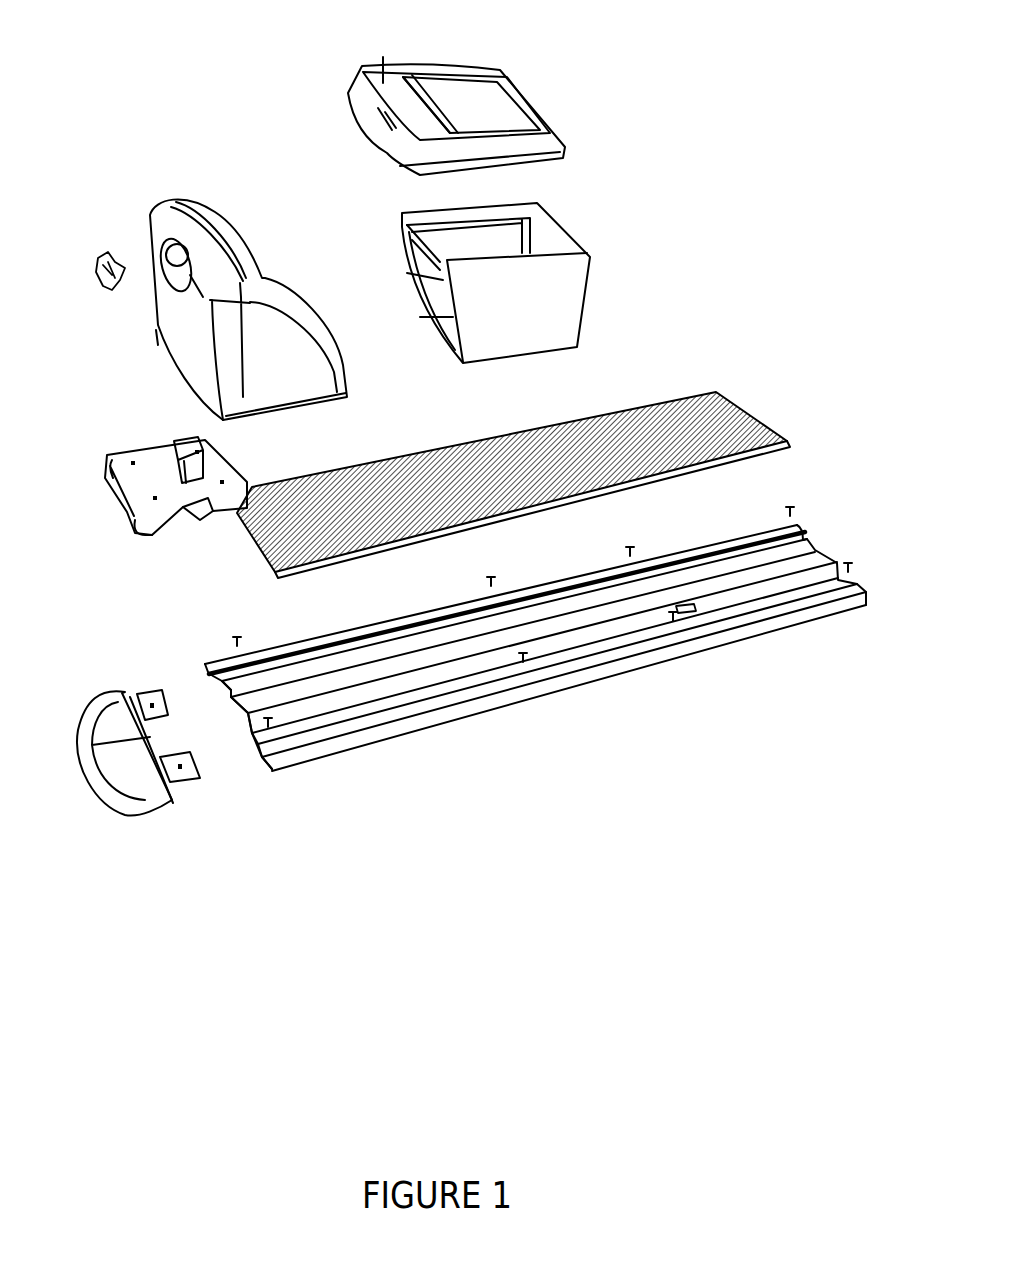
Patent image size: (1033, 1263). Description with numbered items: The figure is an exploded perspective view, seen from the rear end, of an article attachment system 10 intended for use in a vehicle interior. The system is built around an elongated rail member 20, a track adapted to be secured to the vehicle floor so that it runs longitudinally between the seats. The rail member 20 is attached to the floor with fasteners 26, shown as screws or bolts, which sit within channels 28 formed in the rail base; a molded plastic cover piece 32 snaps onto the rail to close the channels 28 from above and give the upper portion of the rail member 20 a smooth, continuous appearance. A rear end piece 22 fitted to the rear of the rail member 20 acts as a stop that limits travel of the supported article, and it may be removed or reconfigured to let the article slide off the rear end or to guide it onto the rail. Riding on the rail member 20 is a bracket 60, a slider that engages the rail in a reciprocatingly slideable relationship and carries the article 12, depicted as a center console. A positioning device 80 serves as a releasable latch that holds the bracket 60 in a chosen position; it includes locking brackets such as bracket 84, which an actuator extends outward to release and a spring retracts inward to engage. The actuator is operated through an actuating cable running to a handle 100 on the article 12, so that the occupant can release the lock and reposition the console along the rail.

The article attachment system 10 is at (779, 67).
The article 12 is at (289, 177).
The handle 100 is at (107, 278).
The positioning device 80 is at (169, 435).
The bracket 84 is at (188, 461).
The bracket 60 is at (142, 492).
The cover piece 32 is at (718, 396).
The rail member 20 is at (463, 697).
The fasteners 26 is at (688, 616).
The channels 28 is at (252, 686).
The rear end piece 22 is at (102, 773).